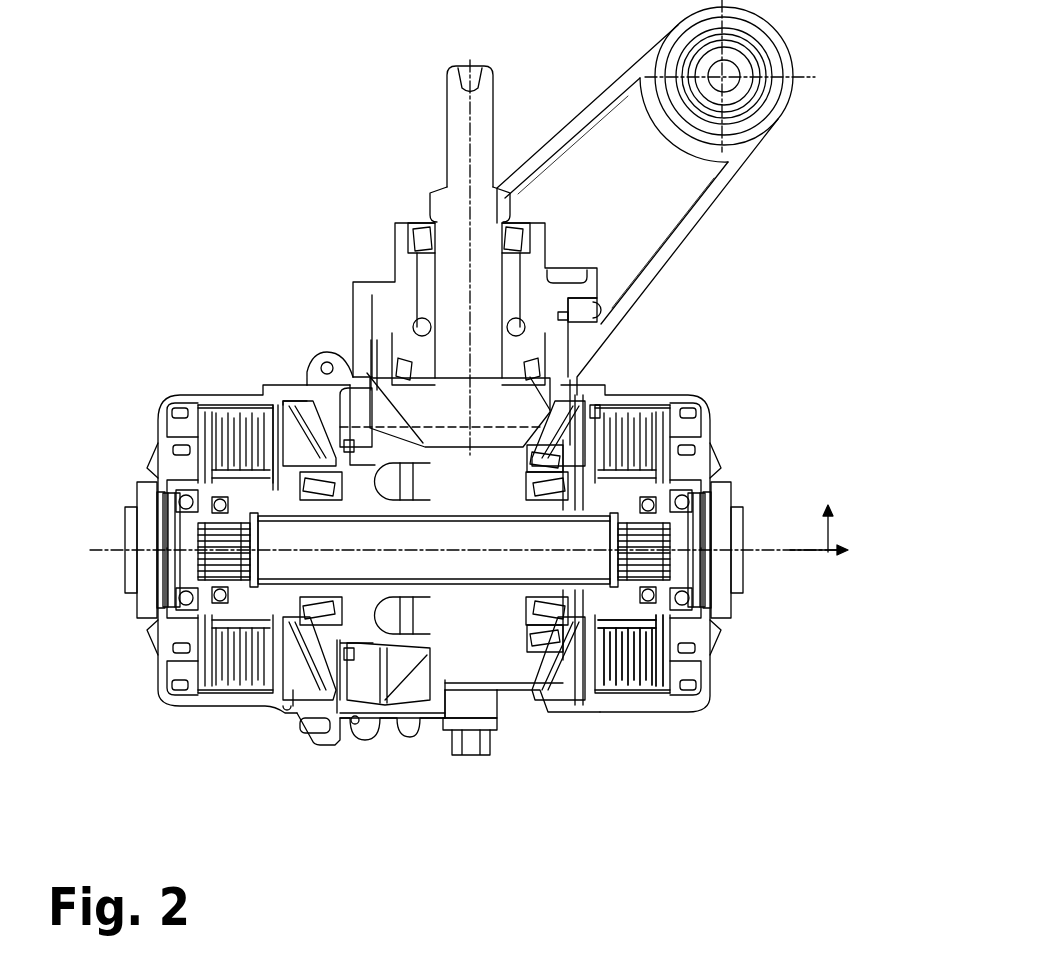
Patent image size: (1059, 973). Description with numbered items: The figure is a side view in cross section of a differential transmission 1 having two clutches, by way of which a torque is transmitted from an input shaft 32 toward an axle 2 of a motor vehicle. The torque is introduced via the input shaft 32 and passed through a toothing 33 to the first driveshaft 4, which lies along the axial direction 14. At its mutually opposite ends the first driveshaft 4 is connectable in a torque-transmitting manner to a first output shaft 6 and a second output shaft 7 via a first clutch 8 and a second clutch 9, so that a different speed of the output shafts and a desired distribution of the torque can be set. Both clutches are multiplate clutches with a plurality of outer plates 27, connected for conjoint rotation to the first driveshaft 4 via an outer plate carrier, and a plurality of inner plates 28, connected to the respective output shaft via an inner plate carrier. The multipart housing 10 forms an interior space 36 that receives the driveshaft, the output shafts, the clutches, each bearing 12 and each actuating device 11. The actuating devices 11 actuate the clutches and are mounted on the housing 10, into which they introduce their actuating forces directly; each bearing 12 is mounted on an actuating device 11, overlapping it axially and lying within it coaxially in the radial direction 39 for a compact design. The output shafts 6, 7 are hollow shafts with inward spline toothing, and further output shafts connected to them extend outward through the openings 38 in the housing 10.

The differential transmission 1 is at (461, 425).
The axle 2 is at (475, 376).
The first driveshaft 4 is at (483, 590).
The first output shaft 6 is at (663, 537).
The second output shaft 7 is at (215, 545).
The first clutch 8 is at (650, 437).
The second clutch 9 is at (235, 425).
The housing 10 is at (627, 400).
The actuating device 11 is at (183, 433).
The bearing 12 is at (183, 503).
The axial direction 14 is at (836, 570).
The outer plates 27 is at (627, 668).
The inner plates 28 is at (640, 667).
The input shaft 32 is at (468, 262).
The toothing 33 is at (428, 445).
The interior space 36 is at (462, 660).
The openings 38 is at (140, 565).
The radial direction 39 is at (850, 526).